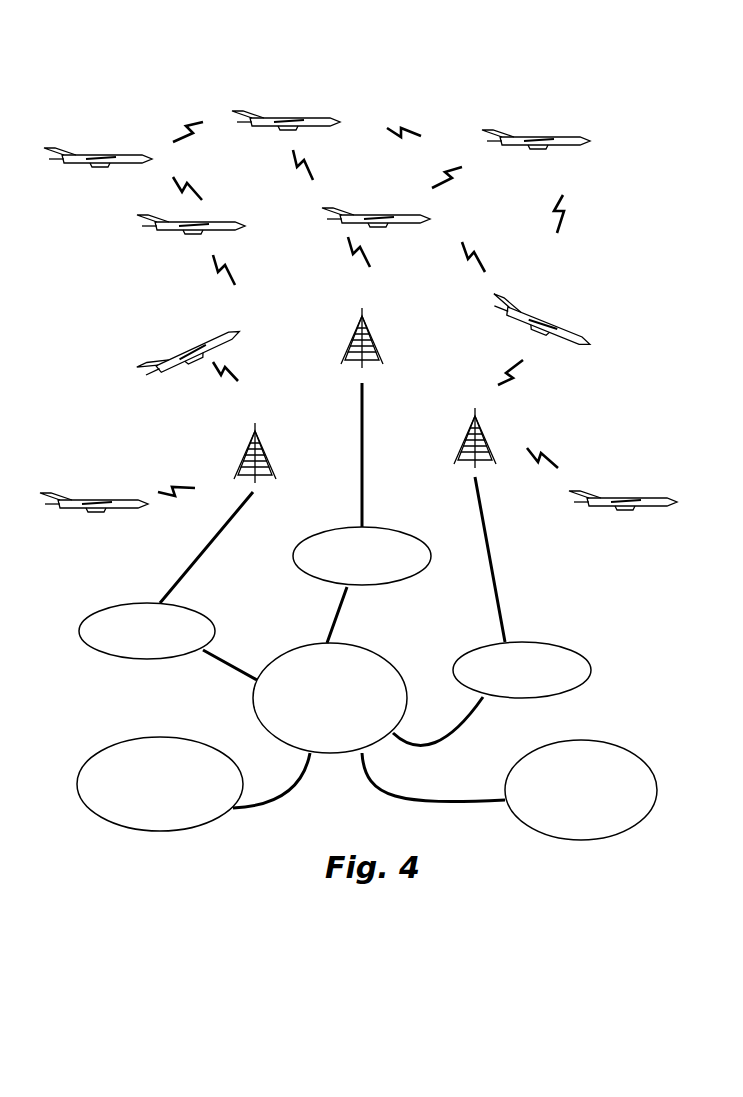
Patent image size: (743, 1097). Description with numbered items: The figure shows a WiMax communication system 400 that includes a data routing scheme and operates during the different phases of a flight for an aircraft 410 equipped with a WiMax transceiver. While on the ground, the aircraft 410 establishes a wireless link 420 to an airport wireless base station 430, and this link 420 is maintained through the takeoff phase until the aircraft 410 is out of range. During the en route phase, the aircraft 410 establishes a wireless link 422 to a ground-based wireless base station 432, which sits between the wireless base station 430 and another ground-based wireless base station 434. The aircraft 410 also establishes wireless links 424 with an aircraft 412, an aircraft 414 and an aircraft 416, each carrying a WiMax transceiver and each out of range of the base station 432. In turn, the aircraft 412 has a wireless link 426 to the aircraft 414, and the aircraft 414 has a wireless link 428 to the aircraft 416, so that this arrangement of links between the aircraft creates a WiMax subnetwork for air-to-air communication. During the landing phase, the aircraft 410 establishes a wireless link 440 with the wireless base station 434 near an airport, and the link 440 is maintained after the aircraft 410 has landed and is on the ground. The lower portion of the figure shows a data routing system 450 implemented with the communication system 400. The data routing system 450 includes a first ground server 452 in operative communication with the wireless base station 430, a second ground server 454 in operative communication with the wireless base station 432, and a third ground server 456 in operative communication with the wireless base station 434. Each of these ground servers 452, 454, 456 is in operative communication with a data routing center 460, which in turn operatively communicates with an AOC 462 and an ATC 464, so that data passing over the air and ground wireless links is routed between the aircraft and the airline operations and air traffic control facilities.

The WiMax communication system 400 is at (427, 78).
The aircraft 410 is at (392, 218).
The aircraft 412 is at (122, 157).
The aircraft 414 is at (310, 120).
The aircraft 416 is at (552, 138).
The wireless link 420 is at (230, 373).
The wireless link 422 is at (223, 268).
The wireless links 424 is at (190, 198).
The wireless link 426 is at (183, 132).
The wireless link 428 is at (407, 127).
The airport wireless base station 430 is at (260, 438).
The ground-based wireless base station 432 is at (367, 323).
The ground-based wireless base station 434 is at (480, 420).
The wireless link 440 is at (517, 372).
The data routing system 450 is at (568, 622).
The first ground server 452 is at (97, 652).
The second ground server 454 is at (413, 578).
The third ground server 456 is at (590, 675).
The data routing center 460 is at (255, 712).
The AOC 462 is at (92, 813).
The ATC 464 is at (643, 820).